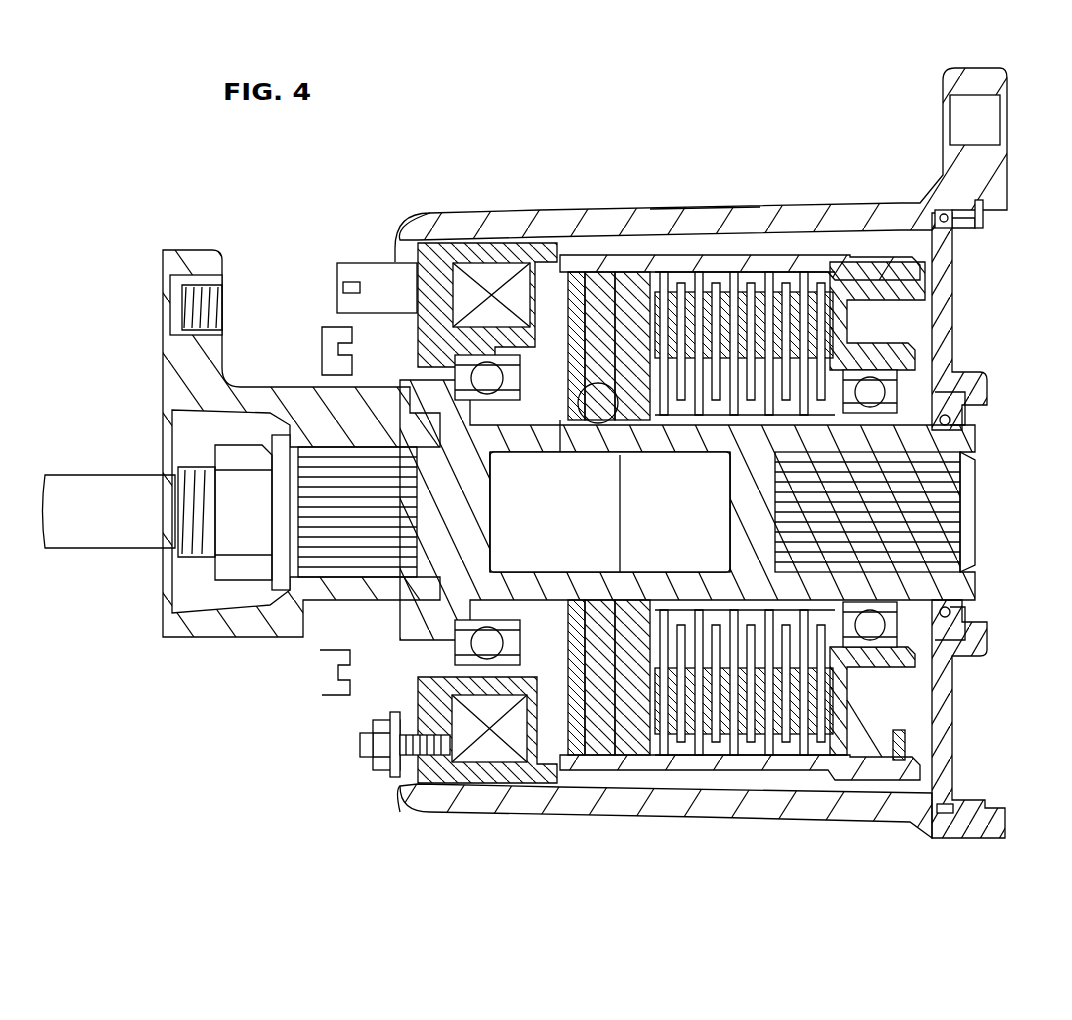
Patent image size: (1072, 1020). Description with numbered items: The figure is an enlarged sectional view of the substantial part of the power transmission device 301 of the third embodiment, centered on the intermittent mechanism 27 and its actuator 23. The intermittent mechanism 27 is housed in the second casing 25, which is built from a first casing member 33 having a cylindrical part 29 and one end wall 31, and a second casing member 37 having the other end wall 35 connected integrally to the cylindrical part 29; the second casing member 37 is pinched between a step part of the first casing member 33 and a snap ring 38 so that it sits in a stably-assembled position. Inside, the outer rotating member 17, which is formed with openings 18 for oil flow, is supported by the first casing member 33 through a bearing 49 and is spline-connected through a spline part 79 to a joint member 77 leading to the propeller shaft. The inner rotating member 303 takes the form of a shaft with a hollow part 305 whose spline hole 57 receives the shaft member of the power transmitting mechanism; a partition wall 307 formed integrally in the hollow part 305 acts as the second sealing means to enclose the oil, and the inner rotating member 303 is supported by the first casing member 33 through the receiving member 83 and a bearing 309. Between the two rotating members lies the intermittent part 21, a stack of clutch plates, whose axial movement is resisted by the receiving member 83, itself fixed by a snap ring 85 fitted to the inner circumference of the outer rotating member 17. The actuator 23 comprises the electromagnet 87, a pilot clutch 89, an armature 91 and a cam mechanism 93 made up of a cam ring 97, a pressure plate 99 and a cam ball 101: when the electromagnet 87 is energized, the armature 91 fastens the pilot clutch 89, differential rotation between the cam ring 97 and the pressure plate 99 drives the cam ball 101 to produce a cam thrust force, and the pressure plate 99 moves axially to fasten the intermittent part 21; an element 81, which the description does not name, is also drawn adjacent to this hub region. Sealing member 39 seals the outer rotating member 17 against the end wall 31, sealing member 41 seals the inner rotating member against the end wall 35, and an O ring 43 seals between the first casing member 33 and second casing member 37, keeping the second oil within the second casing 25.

The outer rotating member 17 is at (720, 250).
The opening 18 is at (594, 250).
The intermittent part 21 is at (776, 248).
The actuator 23 is at (424, 186).
The second casing 25 is at (855, 200).
The intermittent mechanism 27 is at (690, 192).
The cylindrical part 29 is at (650, 215).
The end wall 31 is at (414, 790).
The first casing member 33 is at (598, 820).
The end wall 35 is at (950, 727).
The second casing member 37 is at (957, 318).
The snap ring 38 is at (985, 228).
The sealing member 39 is at (336, 362).
The sealing member 41 is at (968, 420).
The O ring 43 is at (955, 232).
The bearing 49 is at (458, 378).
The spline hole 57 is at (935, 510).
The joint member 77 is at (212, 352).
The spline part 79 is at (268, 445).
The hub side wall 81 is at (520, 440).
The receiving member 83 is at (820, 236).
The snap ring 85 is at (908, 315).
The electromagnet 87 is at (494, 238).
The pilot clutch 89 is at (568, 252).
The armature 91 is at (596, 268).
The cam mechanism 93 is at (601, 458).
The cam ring 97 is at (575, 435).
The pressure plate 99 is at (622, 432).
The cam ball 101 is at (545, 315).
The power transmission device 301 is at (634, 135).
The inner rotating member 303 is at (702, 440).
The hollow part 305 is at (670, 600).
The partition wall 307 is at (738, 538).
The bearing 309 is at (868, 390).